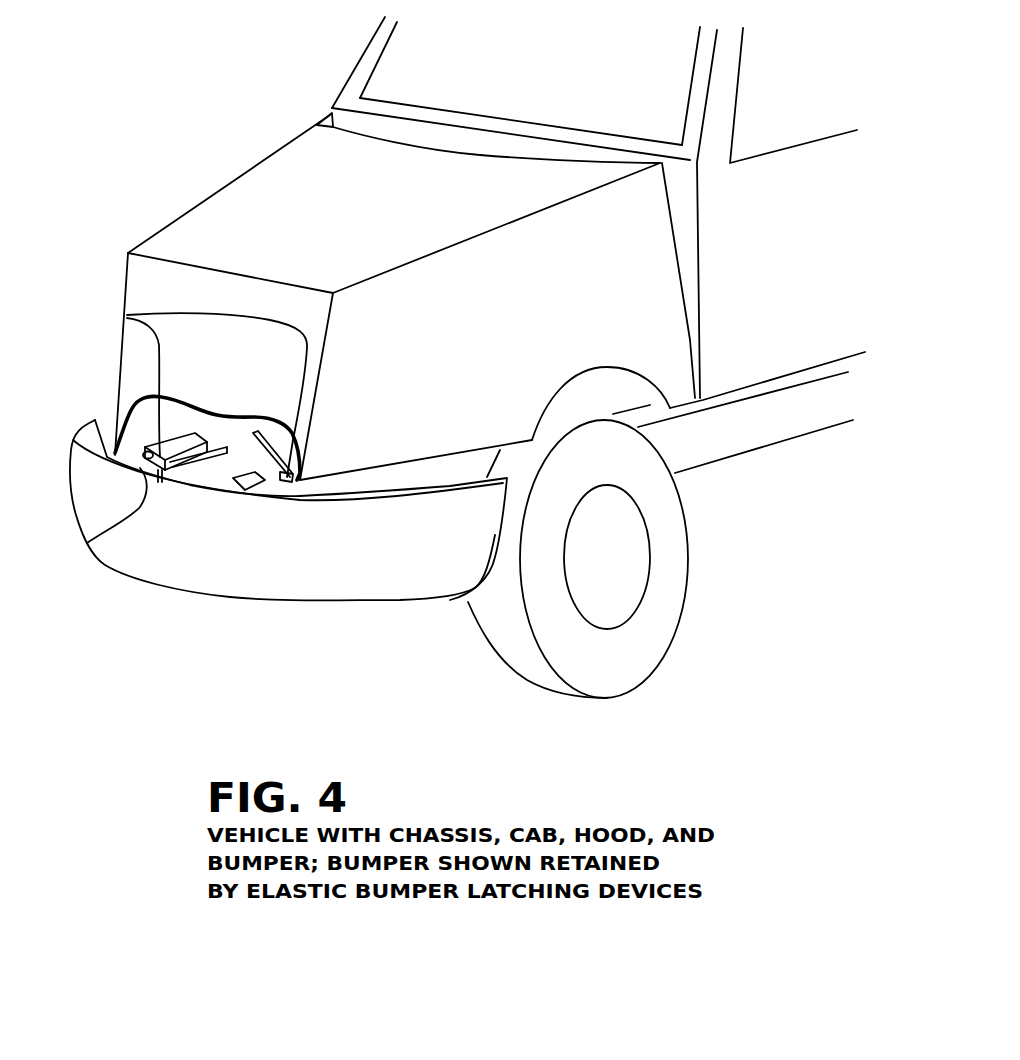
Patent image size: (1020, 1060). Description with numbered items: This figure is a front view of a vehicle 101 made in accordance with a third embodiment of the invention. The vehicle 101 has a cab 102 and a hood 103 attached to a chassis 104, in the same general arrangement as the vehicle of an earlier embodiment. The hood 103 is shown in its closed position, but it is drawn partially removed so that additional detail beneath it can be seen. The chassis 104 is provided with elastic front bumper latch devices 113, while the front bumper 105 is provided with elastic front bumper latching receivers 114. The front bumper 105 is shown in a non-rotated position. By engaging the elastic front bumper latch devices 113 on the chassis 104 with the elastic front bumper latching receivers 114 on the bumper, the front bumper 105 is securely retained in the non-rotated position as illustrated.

The vehicle 101 is at (368, 47).
The cab 102 is at (737, 355).
The hood 103 is at (237, 177).
The chassis 104 is at (727, 438).
The front bumper 105 is at (428, 600).
The elastic front bumper latch device 113 is at (130, 317).
The elastic front bumper latching receiver 114 is at (243, 427).